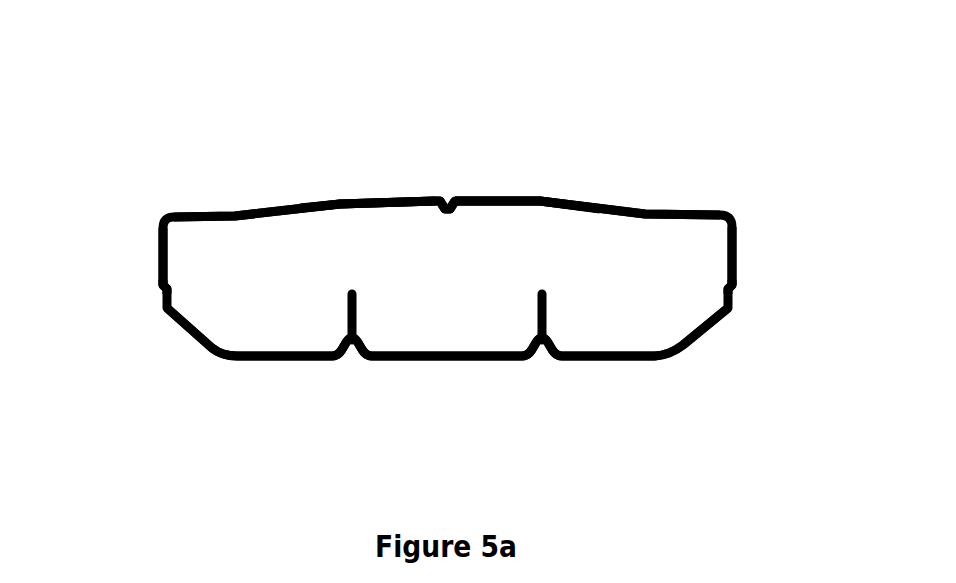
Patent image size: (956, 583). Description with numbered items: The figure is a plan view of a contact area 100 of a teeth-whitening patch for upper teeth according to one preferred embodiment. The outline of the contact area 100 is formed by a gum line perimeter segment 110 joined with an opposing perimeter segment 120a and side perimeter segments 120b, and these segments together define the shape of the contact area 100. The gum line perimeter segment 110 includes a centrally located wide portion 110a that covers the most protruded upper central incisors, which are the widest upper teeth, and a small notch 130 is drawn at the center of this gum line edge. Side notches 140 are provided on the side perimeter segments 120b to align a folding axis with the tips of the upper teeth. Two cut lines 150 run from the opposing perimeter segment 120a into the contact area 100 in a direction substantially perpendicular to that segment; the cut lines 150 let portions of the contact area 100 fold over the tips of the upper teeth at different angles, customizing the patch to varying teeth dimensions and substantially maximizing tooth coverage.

The contact area 100 is at (170, 155).
The gum line perimeter segment 110 is at (225, 203).
The wide portion 110a is at (372, 199).
The opposing perimeter segment 120a is at (603, 358).
The side perimeter segments 120b is at (160, 258).
The top notch / groove 130 is at (465, 199).
The side notches 140 is at (160, 292).
The cut line 150 is at (347, 306).